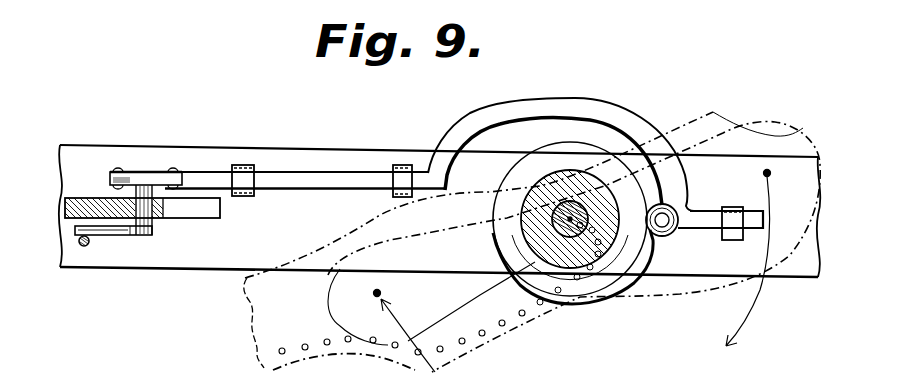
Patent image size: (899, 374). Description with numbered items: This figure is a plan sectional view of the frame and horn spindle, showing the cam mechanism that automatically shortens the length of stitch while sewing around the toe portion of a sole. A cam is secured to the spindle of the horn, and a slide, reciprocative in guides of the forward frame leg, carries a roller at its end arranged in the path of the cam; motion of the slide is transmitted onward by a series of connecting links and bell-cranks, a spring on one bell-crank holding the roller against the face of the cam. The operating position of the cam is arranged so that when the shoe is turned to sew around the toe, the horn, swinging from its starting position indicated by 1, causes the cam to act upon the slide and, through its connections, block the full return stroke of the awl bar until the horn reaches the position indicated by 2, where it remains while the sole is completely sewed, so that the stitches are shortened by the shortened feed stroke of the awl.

The starting position of the horn 1 is at (792, 125).
The sewing position of the horn 2 is at (319, 306).